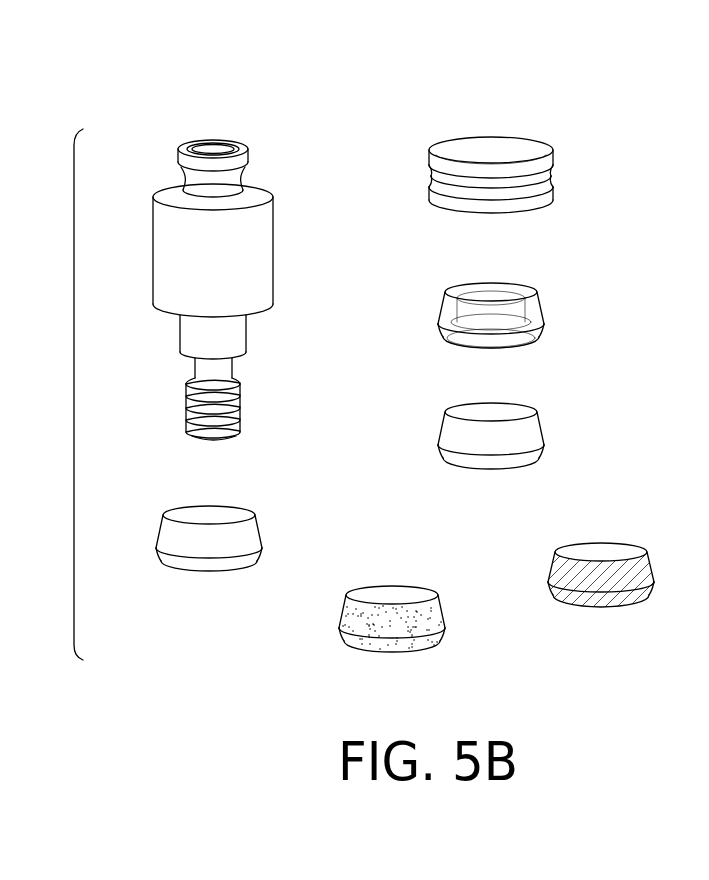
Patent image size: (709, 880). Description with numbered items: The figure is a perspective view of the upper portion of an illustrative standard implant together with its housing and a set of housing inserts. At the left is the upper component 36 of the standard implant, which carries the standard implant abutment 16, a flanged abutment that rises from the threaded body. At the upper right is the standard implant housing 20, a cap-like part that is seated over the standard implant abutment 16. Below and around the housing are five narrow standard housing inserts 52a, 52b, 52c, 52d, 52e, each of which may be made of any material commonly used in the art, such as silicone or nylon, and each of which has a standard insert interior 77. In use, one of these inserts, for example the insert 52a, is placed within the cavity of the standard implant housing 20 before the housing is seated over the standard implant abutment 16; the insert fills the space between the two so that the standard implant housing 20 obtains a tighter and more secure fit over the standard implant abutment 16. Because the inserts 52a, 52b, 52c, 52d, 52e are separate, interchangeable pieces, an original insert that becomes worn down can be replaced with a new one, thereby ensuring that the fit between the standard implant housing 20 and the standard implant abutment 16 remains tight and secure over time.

The standard implant abutment 16 is at (270, 241).
The upper component 36 is at (285, 270).
The standard implant housing 20 is at (567, 175).
The standard implant housing insert 52a is at (560, 316).
The standard insert interior 77 is at (458, 352).
The standard implant housing insert 52b is at (555, 434).
The standard implant housing insert 52c is at (208, 581).
The standard implant housing insert 52d is at (458, 637).
The standard implant housing insert 52e is at (622, 617).